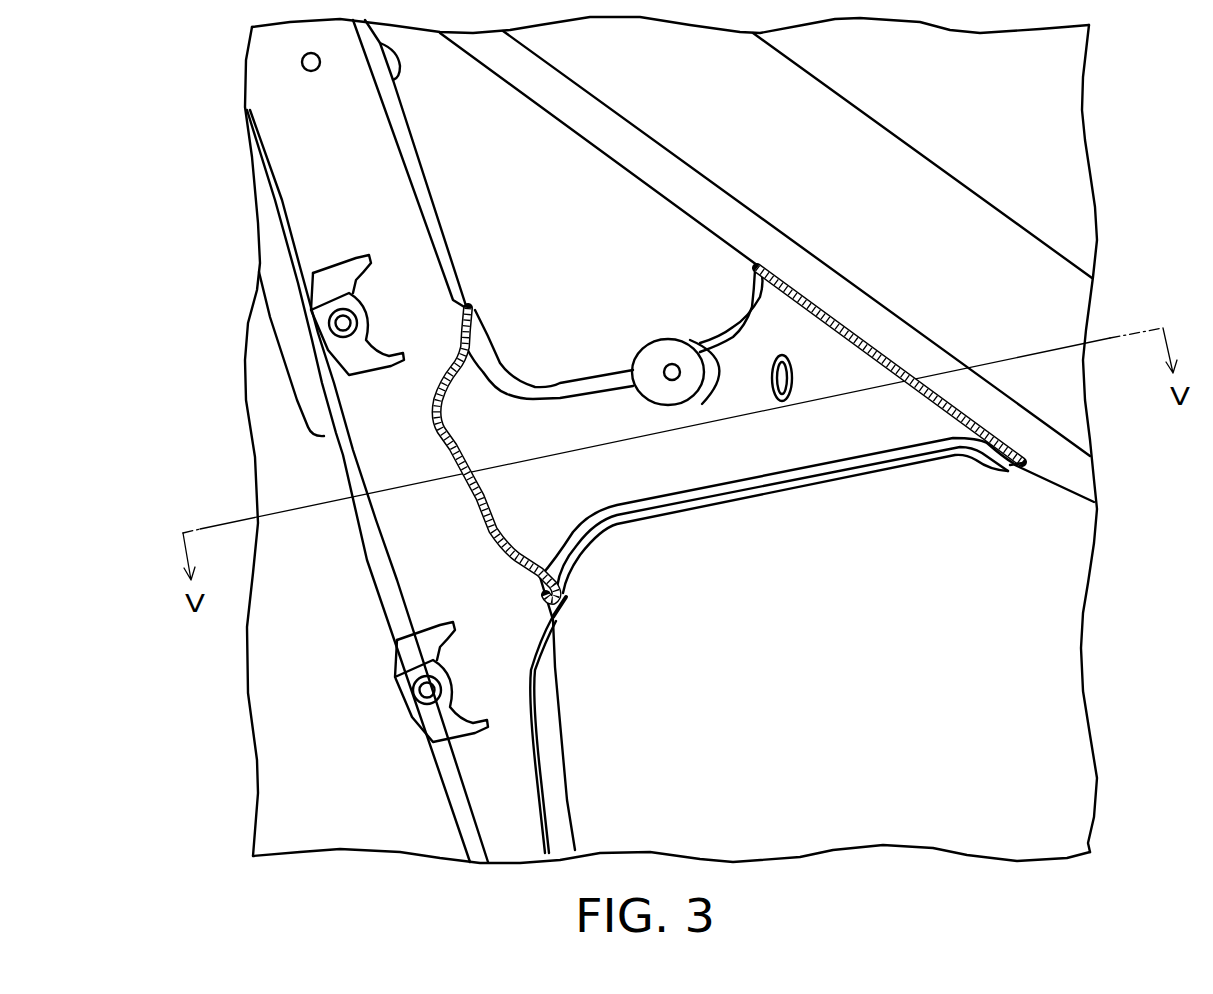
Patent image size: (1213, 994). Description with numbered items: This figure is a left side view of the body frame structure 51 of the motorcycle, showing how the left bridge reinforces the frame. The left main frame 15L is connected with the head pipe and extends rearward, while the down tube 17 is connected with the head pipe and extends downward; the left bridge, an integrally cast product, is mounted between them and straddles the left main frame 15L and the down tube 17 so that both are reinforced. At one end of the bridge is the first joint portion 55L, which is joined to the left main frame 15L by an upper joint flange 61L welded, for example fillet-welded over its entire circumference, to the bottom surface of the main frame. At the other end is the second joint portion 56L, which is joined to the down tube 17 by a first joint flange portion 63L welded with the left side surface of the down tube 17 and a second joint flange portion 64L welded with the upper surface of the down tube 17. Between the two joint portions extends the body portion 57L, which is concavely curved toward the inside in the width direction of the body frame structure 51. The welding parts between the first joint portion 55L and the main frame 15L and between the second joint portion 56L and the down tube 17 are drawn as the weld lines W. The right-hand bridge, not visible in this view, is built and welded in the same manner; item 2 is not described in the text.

The vehicle body 2 is at (285, 415).
The left main frame 15L is at (958, 179).
The down tube 17 is at (383, 620).
The body frame structure 51 is at (925, 114).
The first joint portion 55L is at (1008, 467).
The second joint portion 56L is at (572, 585).
The body portion 57L is at (750, 498).
The upper joint flange 61L is at (757, 269).
The first joint flange portion 63L is at (478, 485).
The second joint flange portion 64L is at (470, 308).
The weld lines W is at (443, 427).